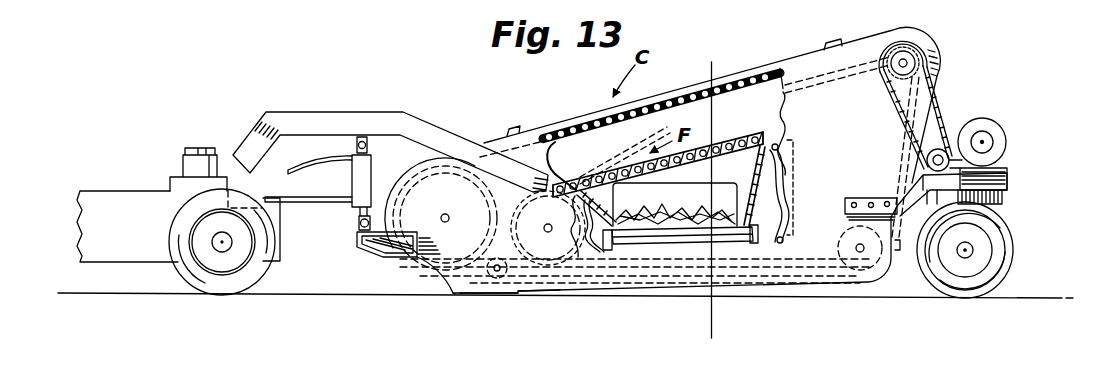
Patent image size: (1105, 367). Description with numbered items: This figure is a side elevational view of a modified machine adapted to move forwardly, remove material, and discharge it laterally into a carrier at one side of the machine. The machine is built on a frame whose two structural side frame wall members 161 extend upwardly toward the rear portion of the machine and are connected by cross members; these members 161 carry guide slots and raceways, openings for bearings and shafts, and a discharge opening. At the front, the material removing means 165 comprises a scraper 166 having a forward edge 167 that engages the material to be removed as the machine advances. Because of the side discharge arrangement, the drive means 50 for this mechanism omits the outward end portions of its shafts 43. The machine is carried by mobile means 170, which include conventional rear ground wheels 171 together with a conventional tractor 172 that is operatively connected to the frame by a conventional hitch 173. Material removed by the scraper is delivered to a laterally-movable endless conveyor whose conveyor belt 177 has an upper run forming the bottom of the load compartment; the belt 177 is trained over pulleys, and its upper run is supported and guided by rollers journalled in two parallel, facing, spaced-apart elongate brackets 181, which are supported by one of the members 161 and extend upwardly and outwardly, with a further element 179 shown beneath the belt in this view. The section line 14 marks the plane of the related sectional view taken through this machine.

The section line 14- 14 is at (711, 69).
The shafts 43 is at (449, 221).
The drive means 50 is at (440, 208).
The side frame wall members 161 is at (523, 143).
The material removing means 165 is at (493, 307).
The scraper 166 is at (473, 303).
The forward edge 167 is at (452, 294).
The mobile means 170 is at (148, 185).
The rear ground wheels 171 is at (1000, 245).
The tractor 172 is at (118, 218).
The hitch 173 is at (370, 113).
The conveyor belt 177 is at (743, 248).
The hopper tray 179 is at (621, 248).
The brackets 181 is at (607, 250).